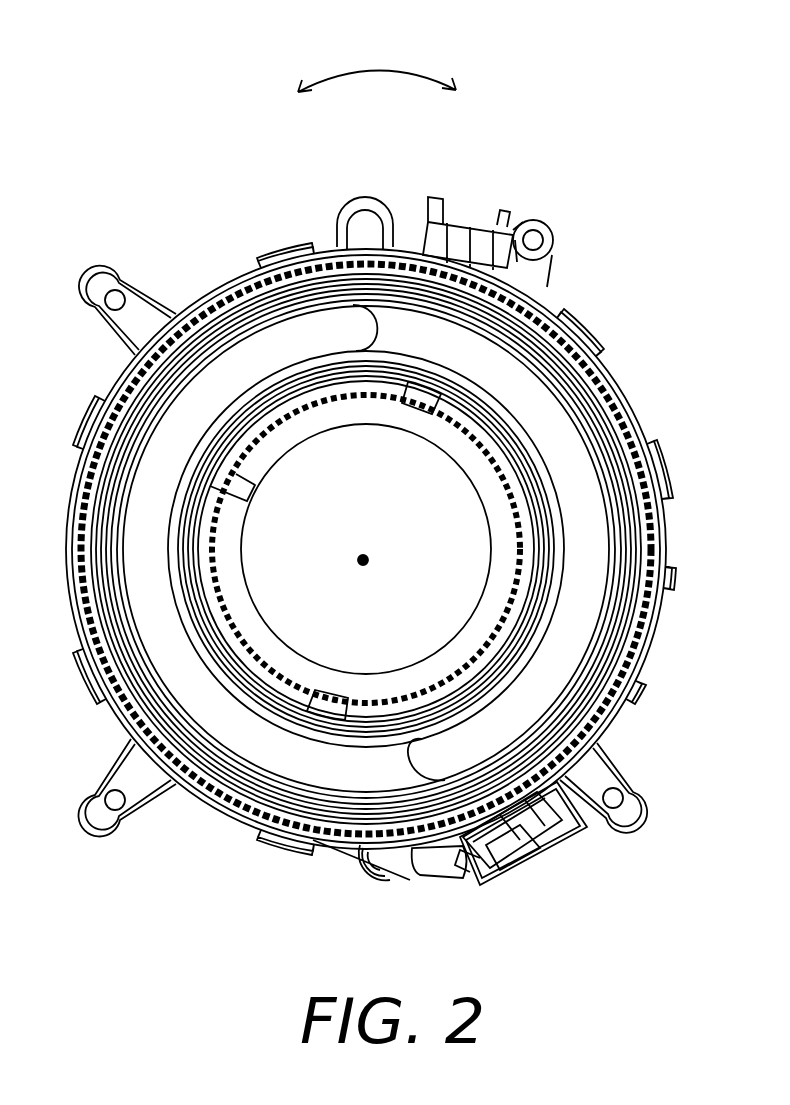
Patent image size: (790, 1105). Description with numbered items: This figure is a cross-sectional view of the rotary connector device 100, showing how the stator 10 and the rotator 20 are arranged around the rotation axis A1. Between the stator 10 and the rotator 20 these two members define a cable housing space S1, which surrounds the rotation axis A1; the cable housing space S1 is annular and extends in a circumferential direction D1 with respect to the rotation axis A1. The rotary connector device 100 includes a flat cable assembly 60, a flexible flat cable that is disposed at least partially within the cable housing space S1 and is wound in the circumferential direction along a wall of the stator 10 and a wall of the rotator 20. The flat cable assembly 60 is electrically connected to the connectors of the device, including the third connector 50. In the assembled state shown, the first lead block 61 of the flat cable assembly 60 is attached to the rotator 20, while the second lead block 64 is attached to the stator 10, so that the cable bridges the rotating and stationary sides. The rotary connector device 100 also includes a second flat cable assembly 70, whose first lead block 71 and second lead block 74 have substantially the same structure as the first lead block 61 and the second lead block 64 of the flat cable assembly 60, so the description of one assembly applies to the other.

The rotary connector device 100 is at (606, 168).
The stator 10 is at (585, 270).
The rotator 20 is at (480, 636).
The third connector 50 is at (562, 868).
The flat cable assembly 60 is at (390, 320).
The first lead block 61 is at (412, 403).
The second lead block 64 is at (576, 836).
The flat cable assembly 70 is at (454, 766).
The first lead block 71 is at (330, 700).
The second lead block 74 is at (500, 862).
The rotation axis A1 is at (360, 556).
The cable housing space S1 is at (582, 448).
The circumferential direction D1 is at (376, 68).